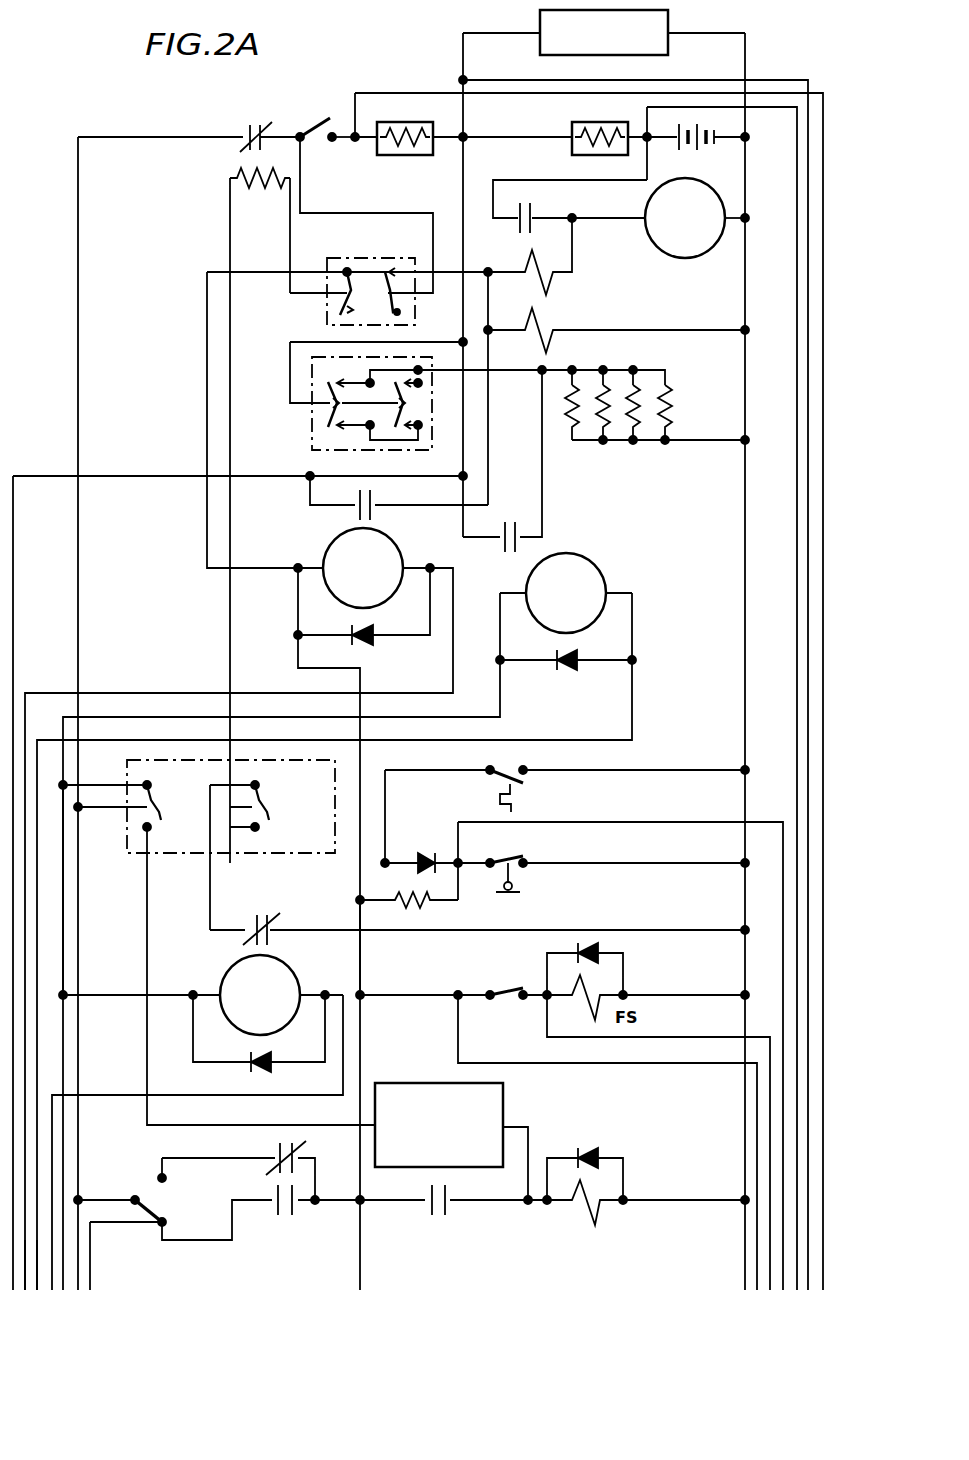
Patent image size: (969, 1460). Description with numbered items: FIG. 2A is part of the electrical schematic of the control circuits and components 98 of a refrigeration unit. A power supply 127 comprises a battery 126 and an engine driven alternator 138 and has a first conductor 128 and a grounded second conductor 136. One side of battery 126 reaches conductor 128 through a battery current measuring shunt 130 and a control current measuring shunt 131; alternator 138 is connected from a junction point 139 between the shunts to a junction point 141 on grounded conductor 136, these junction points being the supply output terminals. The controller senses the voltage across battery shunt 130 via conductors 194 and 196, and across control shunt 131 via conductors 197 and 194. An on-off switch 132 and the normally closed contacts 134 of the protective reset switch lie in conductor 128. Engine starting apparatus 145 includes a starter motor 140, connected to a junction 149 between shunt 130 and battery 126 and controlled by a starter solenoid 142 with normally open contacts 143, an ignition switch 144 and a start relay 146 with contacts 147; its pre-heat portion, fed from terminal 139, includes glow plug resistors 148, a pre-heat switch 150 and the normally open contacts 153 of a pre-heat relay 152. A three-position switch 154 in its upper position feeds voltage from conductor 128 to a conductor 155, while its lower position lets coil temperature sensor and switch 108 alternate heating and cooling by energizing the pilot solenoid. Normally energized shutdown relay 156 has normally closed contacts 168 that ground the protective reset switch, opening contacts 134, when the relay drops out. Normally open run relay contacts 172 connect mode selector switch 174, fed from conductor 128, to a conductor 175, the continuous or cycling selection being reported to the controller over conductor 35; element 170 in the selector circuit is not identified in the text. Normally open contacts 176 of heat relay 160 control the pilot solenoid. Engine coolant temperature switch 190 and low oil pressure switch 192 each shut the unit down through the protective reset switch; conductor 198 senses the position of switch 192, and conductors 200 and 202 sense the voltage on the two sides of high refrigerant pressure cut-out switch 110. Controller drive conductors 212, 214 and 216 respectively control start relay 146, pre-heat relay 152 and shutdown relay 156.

The control circuits and components 98 is at (347, 47).
The power supply 127 is at (720, 68).
The generator or alternator 138 is at (540, 50).
The conductor 194 is at (760, 80).
The conductor 197 is at (370, 93).
The first power supply conductor 128 is at (78, 158).
The normally closed contacts of protective reset switch SSW 134 is at (258, 124).
The on-off switch 132 is at (326, 117).
The second DC current measuring shunt 131 is at (384, 155).
The junction point 139 is at (466, 135).
The first DC current measuring shunt 130 is at (572, 150).
The junction 149 is at (647, 140).
The battery 126 is at (697, 150).
The conductor 196 is at (770, 107).
The junction point 141 is at (748, 150).
The second power supply conductor 136 is at (748, 250).
The normally open contacts of starter solenoid 143 is at (530, 205).
The engine starting apparatus 145 is at (640, 251).
The starter motor 140 is at (687, 258).
The starter solenoid 142 is at (525, 314).
The ignition switch 144 is at (365, 258).
The pre-heat switch 150 is at (312, 435).
The glow plug resistors 148 is at (670, 385).
The normally open contacts of pre-heat relay 153 is at (520, 530).
The normally open contacts of start relay 147 is at (355, 513).
The start relay 146 is at (445, 562).
The pre-heat relay 152 is at (640, 582).
The three-position switch 154 is at (178, 853).
The normally closed contacts of shutdown relay 168 is at (265, 920).
The shutdown relay 156 is at (343, 984).
The conductor 216 is at (88, 1095).
The conductor 155 is at (63, 965).
The conductor 175 is at (362, 1015).
The engine coolant temperature switch 190 is at (497, 778).
The conductor 198 is at (667, 822).
The low oil pressure switch 192 is at (515, 870).
The conductor 200 is at (430, 905).
The high refrigerant pressure cut-out switch 110 is at (512, 1005).
The conductor 202 is at (677, 1063).
The coil temperature sensor and switch 108 is at (505, 1100).
The mode selector switch 174 is at (122, 1189).
The switch 170 is at (282, 1150).
The normally open contacts of run relay 172 is at (286, 1218).
The normally open contacts of heat relay 176 is at (436, 1218).
The heat relay 160 is at (498, 1254).
The conductor 35 is at (92, 1236).
The conductor 214 is at (38, 1257).
The conductor 212 is at (25, 1277).